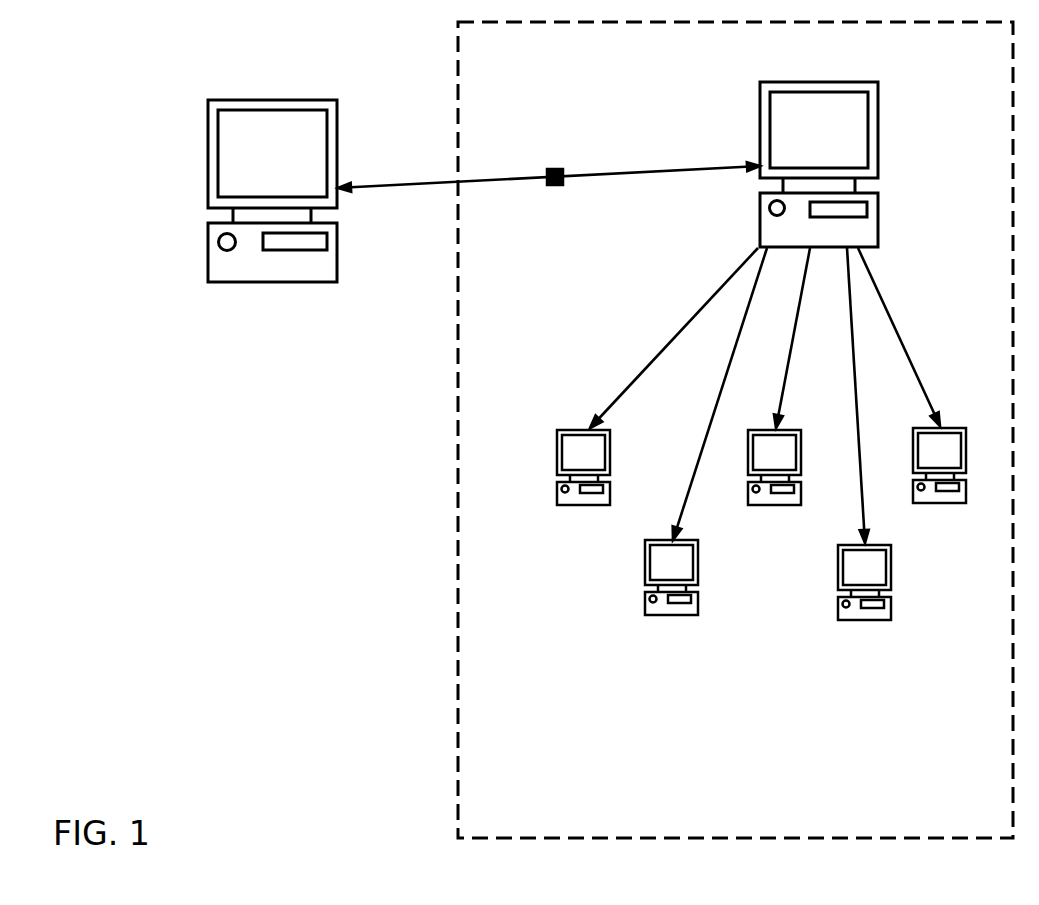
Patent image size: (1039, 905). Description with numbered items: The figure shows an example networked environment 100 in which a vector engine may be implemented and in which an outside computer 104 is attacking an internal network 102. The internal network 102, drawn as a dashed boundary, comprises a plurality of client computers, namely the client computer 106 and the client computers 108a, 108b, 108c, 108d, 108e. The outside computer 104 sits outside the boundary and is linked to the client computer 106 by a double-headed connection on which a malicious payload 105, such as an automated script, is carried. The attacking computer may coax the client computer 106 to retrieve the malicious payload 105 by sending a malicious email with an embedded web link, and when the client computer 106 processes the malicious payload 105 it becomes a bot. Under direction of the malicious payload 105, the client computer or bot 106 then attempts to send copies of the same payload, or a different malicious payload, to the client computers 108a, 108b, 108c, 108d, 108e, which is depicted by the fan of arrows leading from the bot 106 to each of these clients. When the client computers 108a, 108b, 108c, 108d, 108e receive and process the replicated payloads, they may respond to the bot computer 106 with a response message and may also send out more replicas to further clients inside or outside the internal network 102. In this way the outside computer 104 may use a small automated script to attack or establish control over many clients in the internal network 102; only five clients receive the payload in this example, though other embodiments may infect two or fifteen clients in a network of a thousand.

The networked environment 100 is at (212, 582).
The internal network 102 is at (735, 430).
The outside computer 104 is at (275, 206).
The malicious payload 105 is at (549, 165).
The client computer or bot 106 is at (821, 149).
The client computer 108a is at (583, 493).
The client computer 108b is at (672, 603).
The client computer 108c is at (777, 493).
The client computer 108d is at (868, 605).
The client computer 108e is at (943, 490).